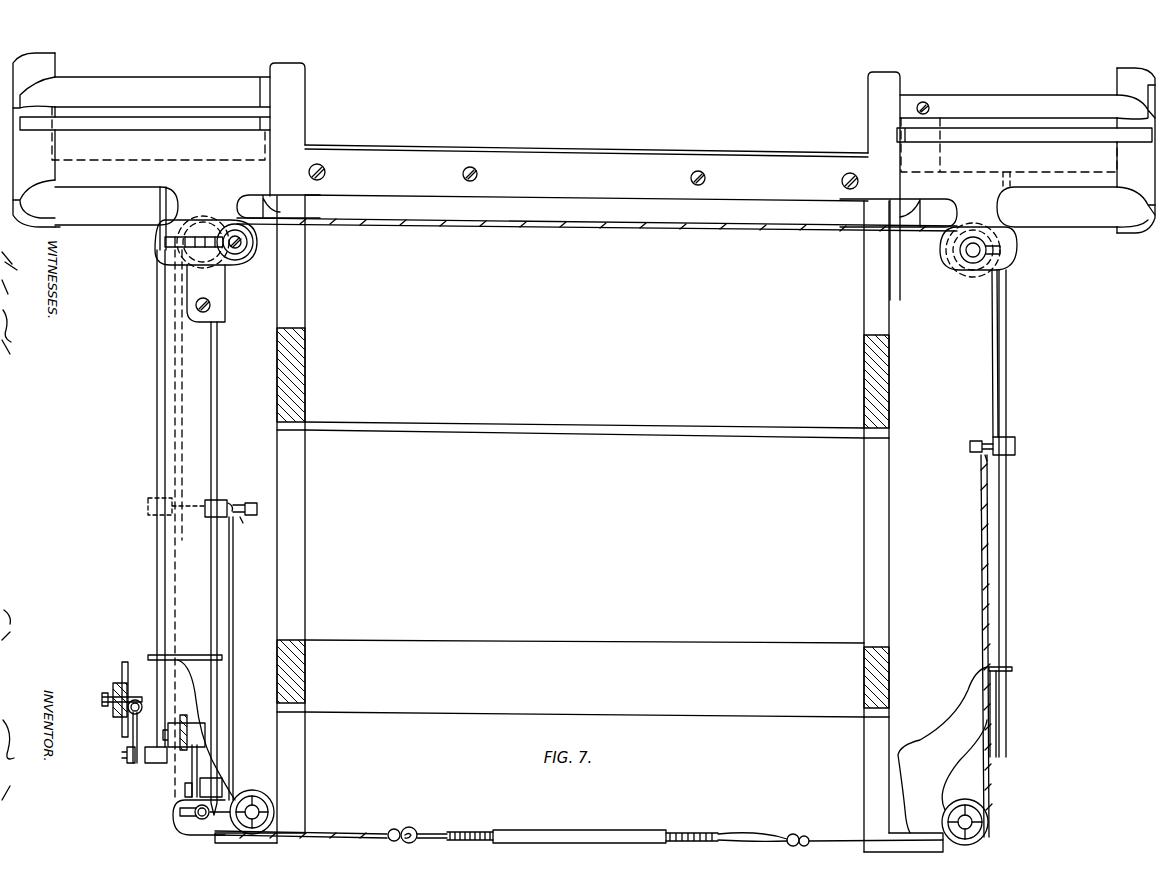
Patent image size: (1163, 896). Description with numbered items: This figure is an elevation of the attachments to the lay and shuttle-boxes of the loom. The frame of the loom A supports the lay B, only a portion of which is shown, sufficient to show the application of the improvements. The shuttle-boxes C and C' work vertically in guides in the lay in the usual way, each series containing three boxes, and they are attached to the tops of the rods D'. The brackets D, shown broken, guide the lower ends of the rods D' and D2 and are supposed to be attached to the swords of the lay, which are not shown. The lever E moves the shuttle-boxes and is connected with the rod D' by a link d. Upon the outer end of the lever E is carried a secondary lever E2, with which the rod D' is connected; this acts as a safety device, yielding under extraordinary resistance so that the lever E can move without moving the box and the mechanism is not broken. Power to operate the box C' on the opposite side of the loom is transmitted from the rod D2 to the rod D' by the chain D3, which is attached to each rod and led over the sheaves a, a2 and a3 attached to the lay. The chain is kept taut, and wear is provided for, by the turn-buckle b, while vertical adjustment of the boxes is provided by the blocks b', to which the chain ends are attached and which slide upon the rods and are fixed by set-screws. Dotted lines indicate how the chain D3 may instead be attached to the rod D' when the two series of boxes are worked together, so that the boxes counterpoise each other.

The frame of the loom A is at (579, 524).
The lay B is at (585, 181).
The shuttle-box C is at (141, 151).
The shuttle-box C' is at (1026, 150).
The bracket D is at (582, 753).
The rod D' is at (579, 525).
The rod D2 is at (592, 540).
The chain D3 is at (603, 519).
The sheave a is at (208, 242).
The sheave a2 is at (978, 255).
The sheave a3 is at (587, 817).
The turn-buckle b is at (579, 829).
The block b' is at (581, 480).
The link d is at (172, 754).
The lever E is at (167, 709).
The secondary lever E2 is at (121, 699).